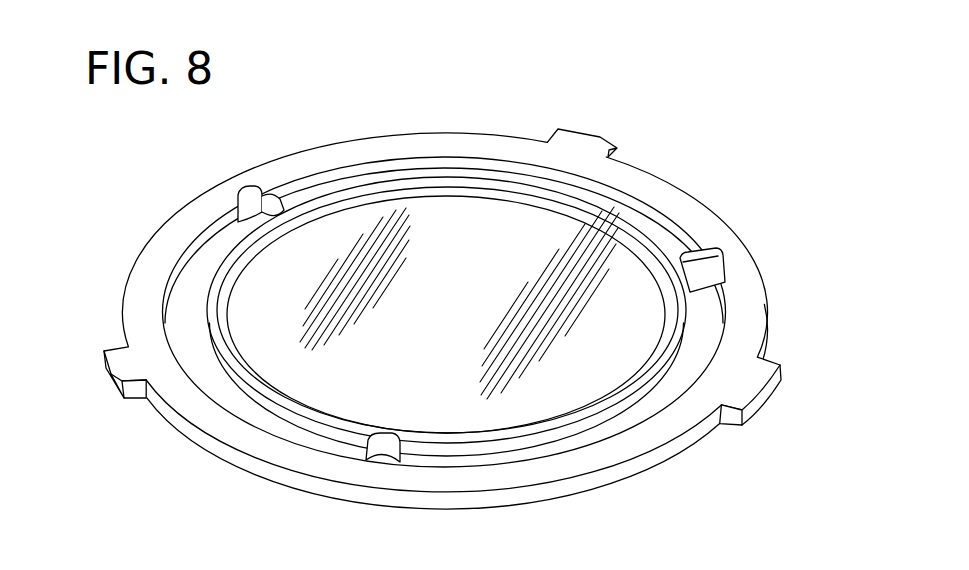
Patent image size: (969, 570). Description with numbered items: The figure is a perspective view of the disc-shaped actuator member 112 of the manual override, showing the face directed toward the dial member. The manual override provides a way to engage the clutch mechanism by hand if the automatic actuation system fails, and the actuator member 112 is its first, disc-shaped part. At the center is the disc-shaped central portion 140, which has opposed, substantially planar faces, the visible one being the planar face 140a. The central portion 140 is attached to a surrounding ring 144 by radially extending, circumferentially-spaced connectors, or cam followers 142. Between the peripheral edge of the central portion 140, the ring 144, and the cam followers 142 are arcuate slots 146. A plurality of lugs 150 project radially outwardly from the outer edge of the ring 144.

The actuator member 112 is at (678, 144).
The disc-shaped central portion 140 is at (262, 325).
The planar face 140a is at (498, 317).
The cam followers 142 is at (253, 195).
The ring 144 is at (478, 133).
The arcuate slots 146 is at (373, 178).
The lugs 150 is at (597, 137).